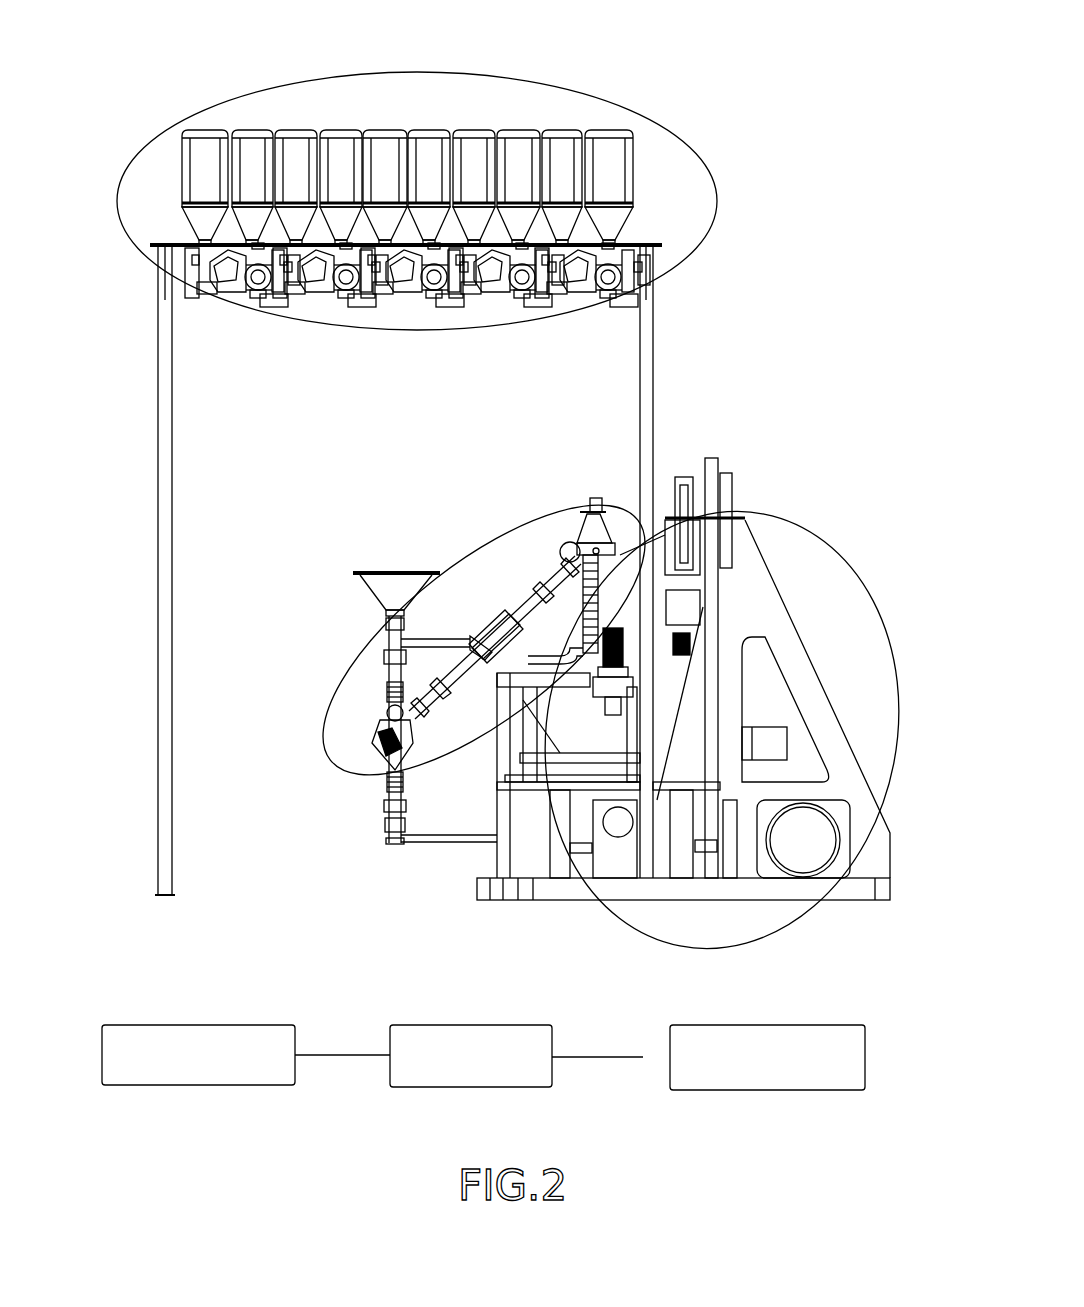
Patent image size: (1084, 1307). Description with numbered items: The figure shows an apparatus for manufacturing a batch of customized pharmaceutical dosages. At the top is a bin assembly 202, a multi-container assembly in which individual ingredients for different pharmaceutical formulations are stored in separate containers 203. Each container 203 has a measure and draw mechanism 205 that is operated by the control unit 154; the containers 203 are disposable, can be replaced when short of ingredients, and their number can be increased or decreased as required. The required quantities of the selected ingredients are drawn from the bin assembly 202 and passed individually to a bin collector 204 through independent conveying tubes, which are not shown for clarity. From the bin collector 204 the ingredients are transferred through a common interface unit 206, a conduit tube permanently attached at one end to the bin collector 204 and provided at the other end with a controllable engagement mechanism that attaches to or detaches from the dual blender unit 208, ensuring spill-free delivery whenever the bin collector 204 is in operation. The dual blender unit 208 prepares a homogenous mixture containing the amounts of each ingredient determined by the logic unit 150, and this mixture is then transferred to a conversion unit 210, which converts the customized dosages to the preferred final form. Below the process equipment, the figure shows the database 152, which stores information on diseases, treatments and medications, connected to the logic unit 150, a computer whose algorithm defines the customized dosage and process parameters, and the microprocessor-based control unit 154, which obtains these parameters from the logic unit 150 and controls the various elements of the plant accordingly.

The bin assembly 202 is at (578, 75).
The container 203 is at (655, 160).
The measure and draw mechanism 205 is at (488, 321).
The bin collector 204 is at (371, 549).
The common interface unit 206 is at (361, 642).
The dual blender unit 208 is at (502, 536).
The conversion unit 210 is at (784, 504).
The database 152 is at (207, 1087).
The logic unit 150 is at (470, 1088).
The control unit 154 is at (768, 1090).